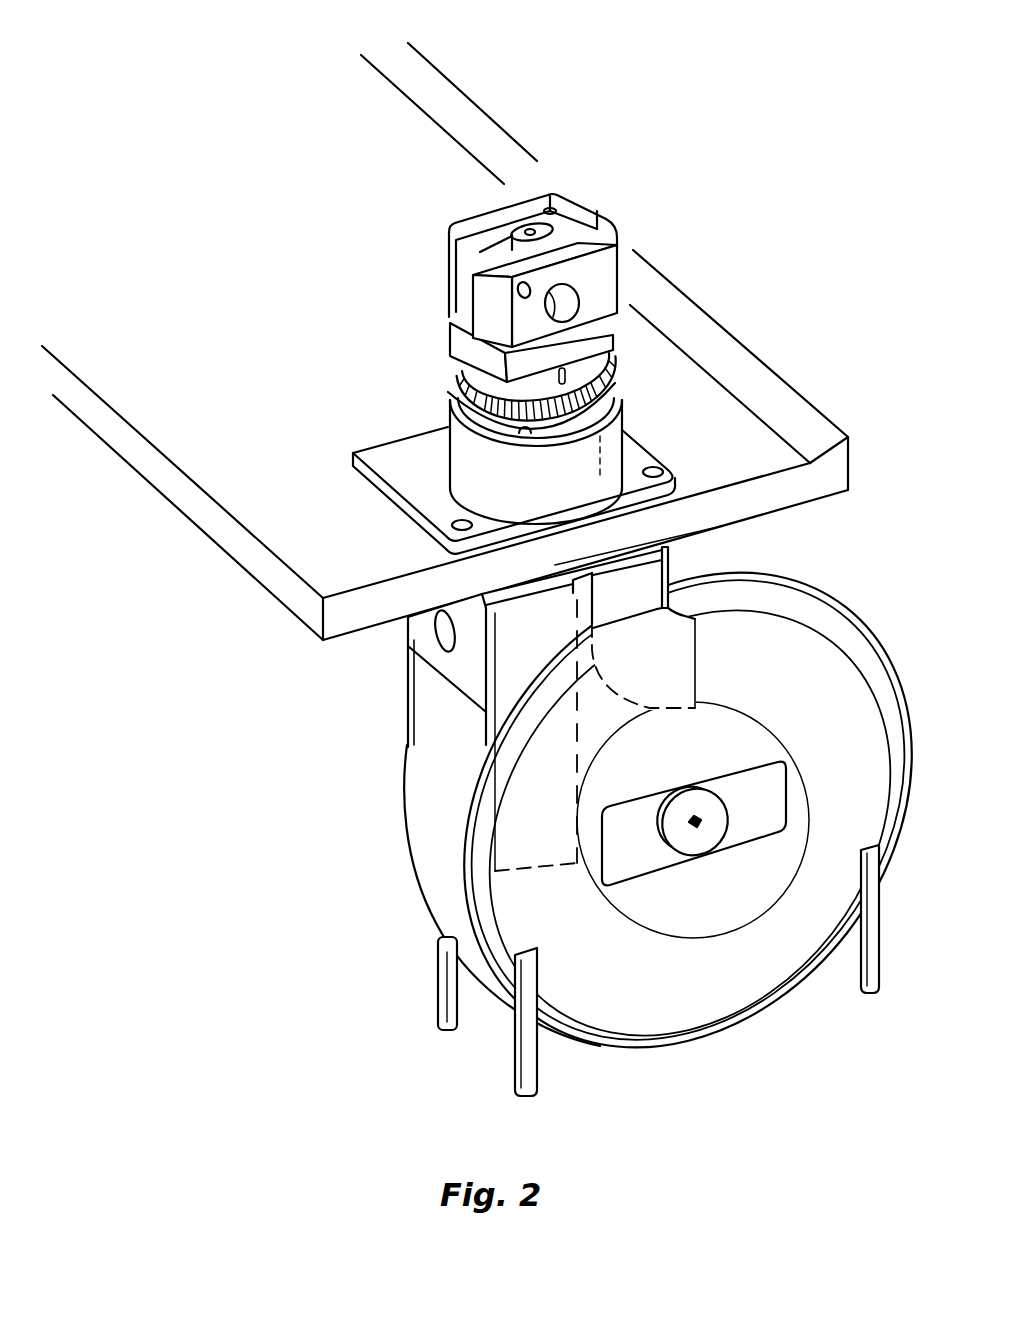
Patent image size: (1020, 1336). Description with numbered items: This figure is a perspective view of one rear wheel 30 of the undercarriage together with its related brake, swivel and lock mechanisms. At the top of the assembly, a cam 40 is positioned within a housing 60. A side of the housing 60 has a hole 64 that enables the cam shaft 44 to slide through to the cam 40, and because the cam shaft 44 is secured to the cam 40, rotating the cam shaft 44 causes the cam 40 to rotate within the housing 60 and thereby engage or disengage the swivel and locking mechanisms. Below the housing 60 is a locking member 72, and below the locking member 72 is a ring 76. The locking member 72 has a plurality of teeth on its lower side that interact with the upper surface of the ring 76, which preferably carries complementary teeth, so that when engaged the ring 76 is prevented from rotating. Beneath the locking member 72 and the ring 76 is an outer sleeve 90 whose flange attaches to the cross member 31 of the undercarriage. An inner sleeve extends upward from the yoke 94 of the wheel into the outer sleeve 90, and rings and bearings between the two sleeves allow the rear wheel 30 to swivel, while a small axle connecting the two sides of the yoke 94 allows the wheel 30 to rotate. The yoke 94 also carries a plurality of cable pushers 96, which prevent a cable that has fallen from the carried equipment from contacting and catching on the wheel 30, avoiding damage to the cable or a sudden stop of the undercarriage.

The rear wheel 30 is at (798, 579).
The cross member 31 is at (288, 357).
The cam 40 is at (600, 212).
The cam shaft 44 is at (480, 142).
The housing 60 is at (603, 267).
The hole 64 is at (567, 307).
The locking member 72 is at (617, 364).
The ring 76 is at (613, 388).
The outer sleeve 90 is at (607, 450).
The yoke 94 is at (513, 827).
The cable pushers 96 is at (523, 1059).